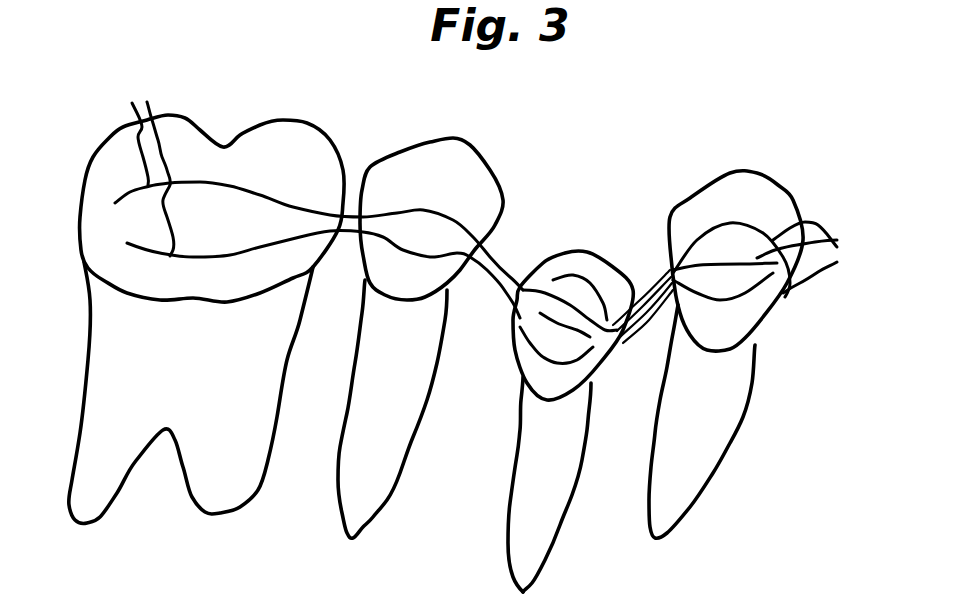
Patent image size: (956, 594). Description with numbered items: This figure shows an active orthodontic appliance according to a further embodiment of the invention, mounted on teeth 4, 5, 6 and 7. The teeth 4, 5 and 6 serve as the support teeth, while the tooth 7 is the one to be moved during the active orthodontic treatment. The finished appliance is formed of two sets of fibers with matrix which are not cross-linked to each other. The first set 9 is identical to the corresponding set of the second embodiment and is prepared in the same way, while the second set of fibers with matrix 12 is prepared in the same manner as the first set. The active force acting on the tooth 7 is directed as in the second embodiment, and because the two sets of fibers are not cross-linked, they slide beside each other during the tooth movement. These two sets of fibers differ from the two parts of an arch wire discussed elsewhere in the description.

The tooth 4 is at (287, 137).
The tooth 5 is at (430, 170).
The tooth 6 is at (763, 210).
The tooth 7 is at (577, 273).
The first set of fibers with matrix 9 is at (148, 164).
The second set of fibers with matrix 12 is at (495, 262).